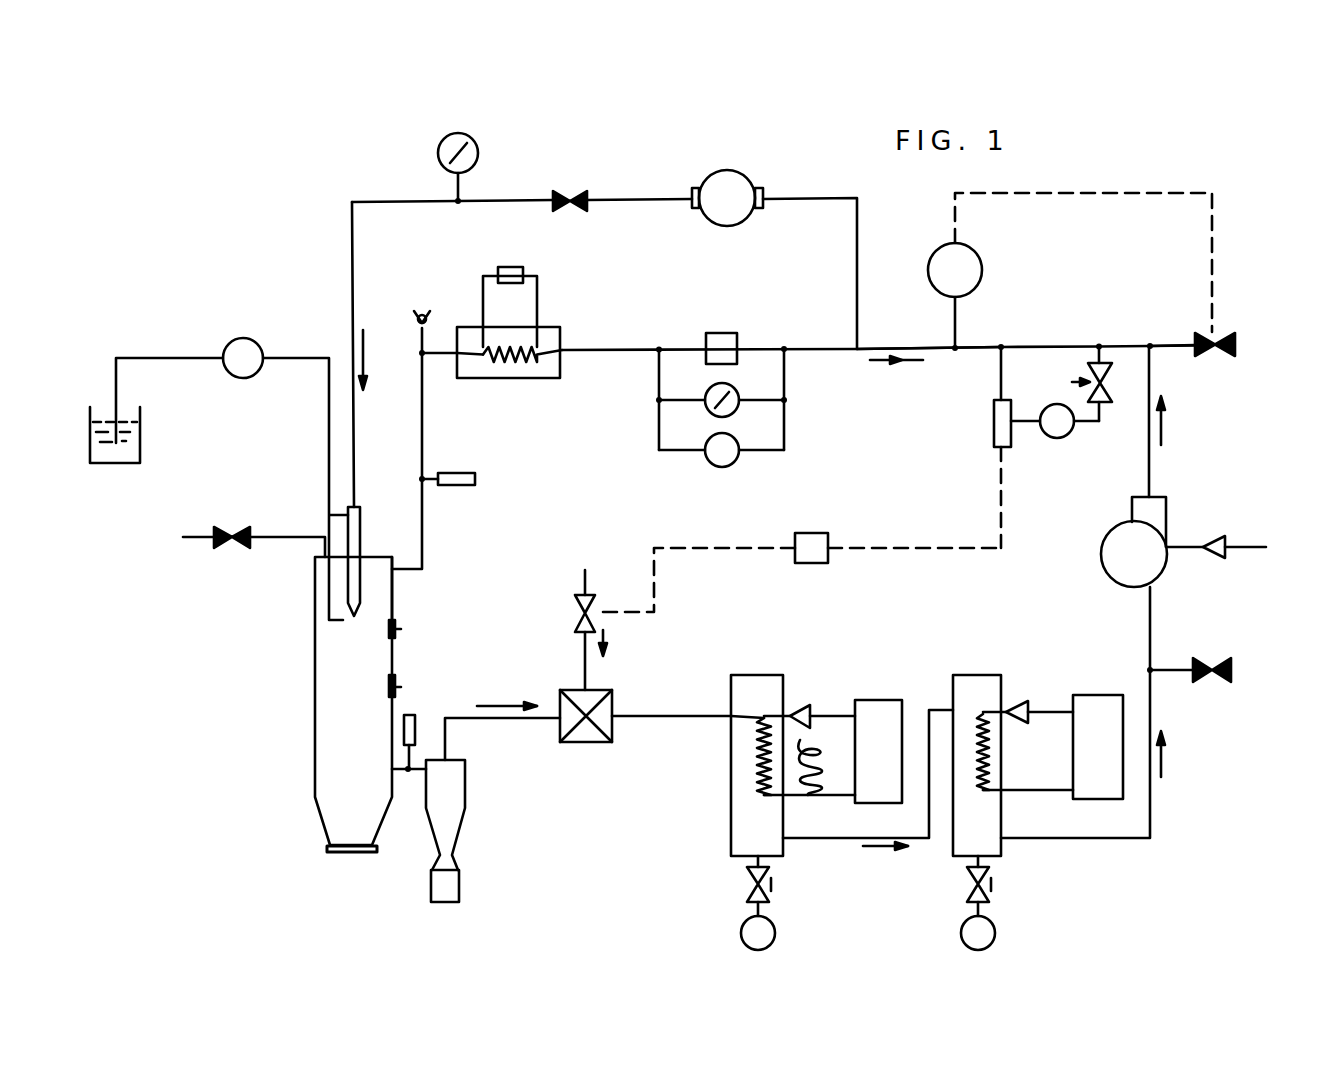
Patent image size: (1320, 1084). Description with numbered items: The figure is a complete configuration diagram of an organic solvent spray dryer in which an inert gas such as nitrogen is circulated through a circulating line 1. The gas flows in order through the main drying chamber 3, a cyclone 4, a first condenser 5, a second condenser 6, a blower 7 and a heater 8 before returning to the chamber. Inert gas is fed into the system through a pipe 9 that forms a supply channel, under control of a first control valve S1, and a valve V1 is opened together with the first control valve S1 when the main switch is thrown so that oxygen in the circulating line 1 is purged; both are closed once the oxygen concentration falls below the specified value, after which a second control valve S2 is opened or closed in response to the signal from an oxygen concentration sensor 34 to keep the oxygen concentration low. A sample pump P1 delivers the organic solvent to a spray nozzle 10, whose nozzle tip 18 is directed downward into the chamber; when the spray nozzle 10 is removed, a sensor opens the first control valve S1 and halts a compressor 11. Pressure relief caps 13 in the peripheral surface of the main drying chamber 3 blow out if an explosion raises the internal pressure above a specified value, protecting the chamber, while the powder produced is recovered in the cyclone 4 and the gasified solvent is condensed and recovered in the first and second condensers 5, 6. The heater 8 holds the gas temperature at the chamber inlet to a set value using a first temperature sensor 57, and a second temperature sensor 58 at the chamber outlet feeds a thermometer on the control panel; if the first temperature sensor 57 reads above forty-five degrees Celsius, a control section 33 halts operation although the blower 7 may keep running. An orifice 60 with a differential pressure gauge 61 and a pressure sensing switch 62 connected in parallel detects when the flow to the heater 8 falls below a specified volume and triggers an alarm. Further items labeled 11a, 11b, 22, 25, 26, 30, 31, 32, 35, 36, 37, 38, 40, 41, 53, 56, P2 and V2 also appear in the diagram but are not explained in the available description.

The circulating line 1 is at (824, 349).
The main drying chamber 3 is at (316, 743).
The cyclone 4 is at (466, 801).
The first condenser 5 is at (816, 800).
The second condenser 6 is at (1041, 796).
The blower 7 is at (1101, 569).
The heater 8 is at (558, 372).
The pipe 9 is at (284, 536).
The spray nozzle 10 is at (361, 597).
The compressor 11 is at (731, 198).
The pump inlet 11a is at (690, 205).
The pump outlet 11b is at (765, 205).
The pressure relief caps 13 is at (397, 640).
The nozzle tip 18 is at (354, 618).
The liquid tank 22 is at (143, 449).
The pressure gauge 25 is at (478, 151).
The valve 26 is at (575, 191).
The cooling column 30 is at (766, 674).
The mixer 31 is at (612, 692).
The collection vessel 32 is at (460, 887).
The control section 33 is at (815, 563).
The oxygen concentration sensor 34 is at (993, 439).
The control valve 35 is at (1110, 393).
The cooling coil 36 is at (757, 736).
The refrigerator 37 is at (888, 699).
The heating coil 38 is at (825, 733).
The drain valve 40 is at (745, 880).
The receiver 41 is at (740, 932).
The gas inlet check valve 53 is at (1242, 545).
The pressure sensor 56 is at (979, 255).
The first temperature sensor 57 is at (476, 479).
The second temperature sensor 58 is at (416, 719).
The orifice 60 is at (733, 333).
The differential pressure gauge 61 is at (735, 410).
The pressure sensing switch 62 is at (735, 462).
The sample pump P1 is at (230, 372).
The pump P2 is at (1057, 438).
The first control valve S1 is at (228, 549).
The second control valve S2 is at (573, 611).
The valve V1 is at (1222, 357).
The valve V2 is at (1218, 683).